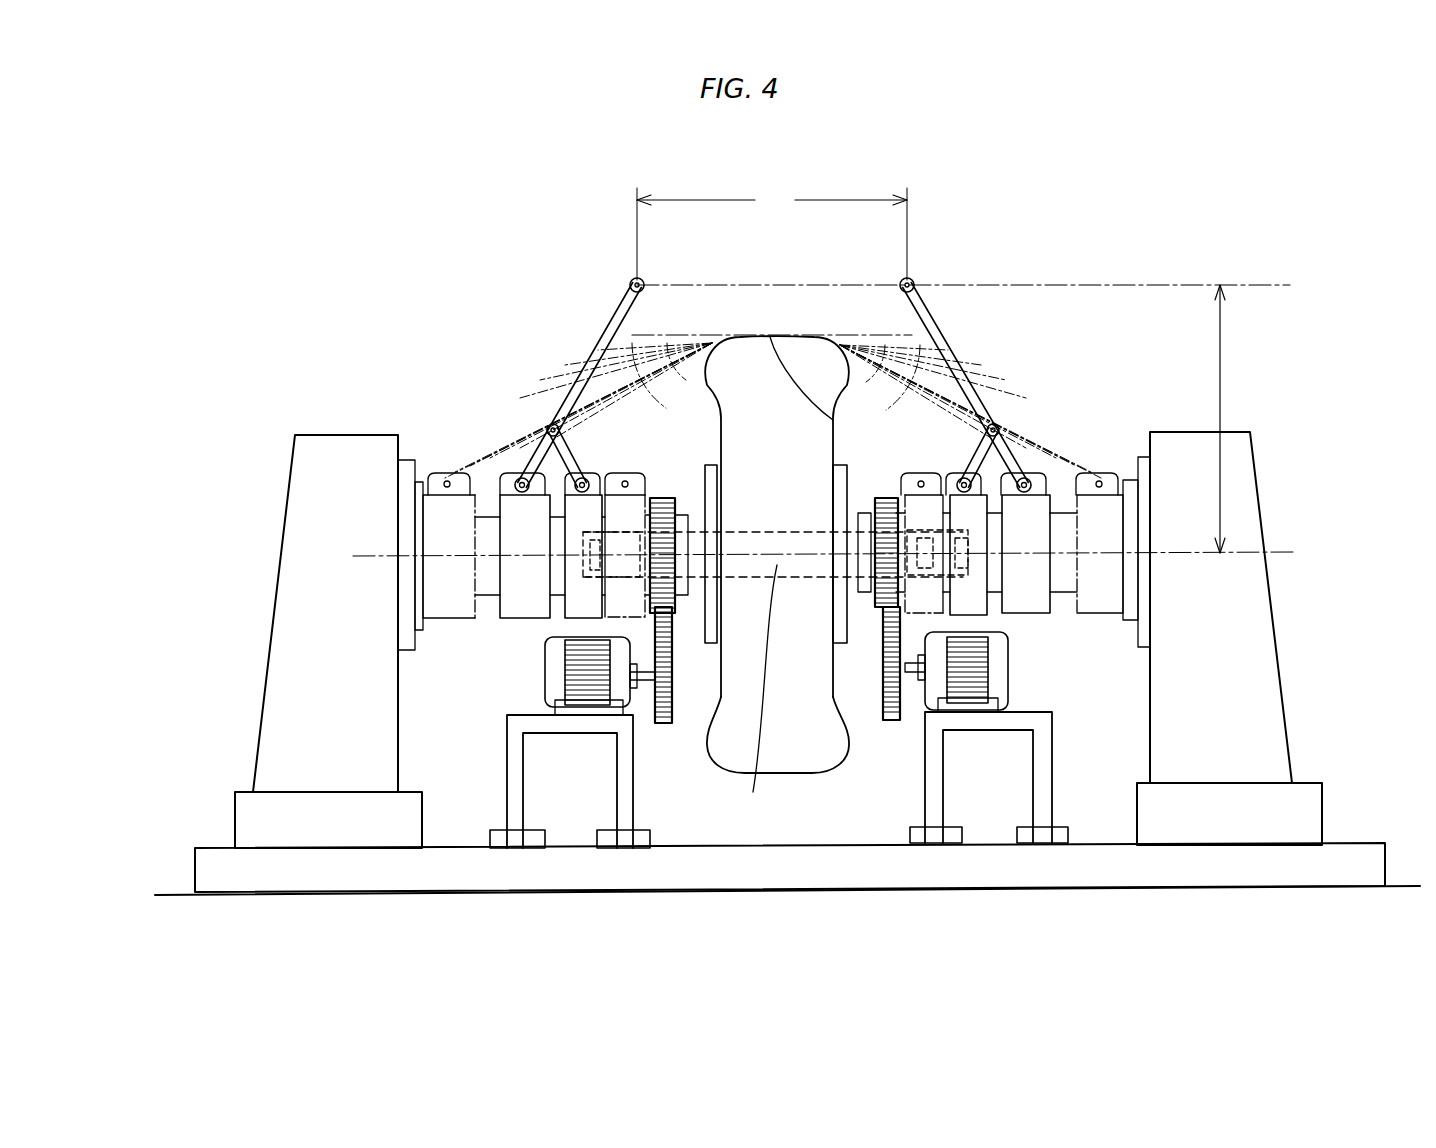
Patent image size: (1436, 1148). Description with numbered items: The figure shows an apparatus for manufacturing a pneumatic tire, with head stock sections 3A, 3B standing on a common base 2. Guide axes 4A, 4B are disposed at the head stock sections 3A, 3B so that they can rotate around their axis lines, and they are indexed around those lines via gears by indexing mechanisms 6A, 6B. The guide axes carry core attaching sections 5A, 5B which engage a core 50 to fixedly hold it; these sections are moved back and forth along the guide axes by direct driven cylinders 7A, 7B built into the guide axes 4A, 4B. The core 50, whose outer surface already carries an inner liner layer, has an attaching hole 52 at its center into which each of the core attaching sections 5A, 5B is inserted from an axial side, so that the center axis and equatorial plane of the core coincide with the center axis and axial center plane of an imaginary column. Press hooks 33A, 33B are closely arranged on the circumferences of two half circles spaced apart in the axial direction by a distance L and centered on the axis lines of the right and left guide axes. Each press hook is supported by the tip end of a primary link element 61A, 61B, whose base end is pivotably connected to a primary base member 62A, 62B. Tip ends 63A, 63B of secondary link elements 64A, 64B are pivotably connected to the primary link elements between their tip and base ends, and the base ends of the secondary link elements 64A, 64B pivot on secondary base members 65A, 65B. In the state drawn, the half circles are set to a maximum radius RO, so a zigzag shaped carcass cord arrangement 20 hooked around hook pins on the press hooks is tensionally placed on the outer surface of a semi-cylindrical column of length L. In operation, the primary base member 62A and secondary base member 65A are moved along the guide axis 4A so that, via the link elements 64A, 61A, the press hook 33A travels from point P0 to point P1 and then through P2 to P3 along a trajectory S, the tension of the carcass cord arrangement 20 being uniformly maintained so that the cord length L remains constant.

The common base 2 is at (1087, 845).
The head stock section 3A is at (1275, 640).
The head stock section 3B is at (320, 525).
The guide axis 4A is at (1087, 580).
The guide axis 4B is at (450, 580).
The core attaching section 5A is at (817, 568).
The core attaching section 5B is at (728, 568).
The indexing mechanism 6A is at (980, 675).
The indexing mechanism 6B is at (585, 668).
The direct driven cylinder 7A is at (935, 557).
The direct driven cylinder 7B is at (613, 563).
The carcass cord arrangement 20 is at (737, 284).
The press hook 33A is at (915, 284).
The press hook 33B is at (666, 256).
The core 50 is at (818, 733).
The attaching hole 52 is at (755, 695).
The primary link element 61A is at (987, 349).
The primary link element 61B is at (610, 354).
The primary base member 62A is at (1037, 538).
The primary base member 62B is at (515, 520).
The tip end of secondary link element 63A is at (999, 426).
The tip end of secondary link element 63B is at (550, 426).
The secondary link element 64A is at (980, 455).
The secondary link element 64B is at (568, 455).
The secondary base member 65A is at (973, 503).
The secondary base member 65B is at (580, 515).
The point P0 is at (912, 282).
The point P1 is at (910, 340).
The point P2 is at (772, 337).
The point P3 is at (742, 337).
The trajectory S is at (838, 352).
The distance L is at (772, 232).
The maximum radius R0 RO is at (1243, 419).